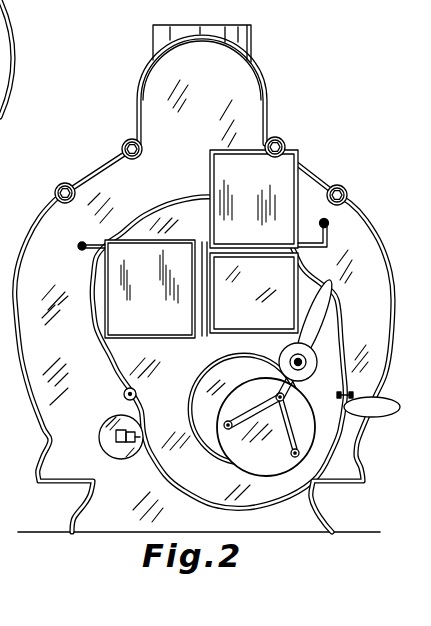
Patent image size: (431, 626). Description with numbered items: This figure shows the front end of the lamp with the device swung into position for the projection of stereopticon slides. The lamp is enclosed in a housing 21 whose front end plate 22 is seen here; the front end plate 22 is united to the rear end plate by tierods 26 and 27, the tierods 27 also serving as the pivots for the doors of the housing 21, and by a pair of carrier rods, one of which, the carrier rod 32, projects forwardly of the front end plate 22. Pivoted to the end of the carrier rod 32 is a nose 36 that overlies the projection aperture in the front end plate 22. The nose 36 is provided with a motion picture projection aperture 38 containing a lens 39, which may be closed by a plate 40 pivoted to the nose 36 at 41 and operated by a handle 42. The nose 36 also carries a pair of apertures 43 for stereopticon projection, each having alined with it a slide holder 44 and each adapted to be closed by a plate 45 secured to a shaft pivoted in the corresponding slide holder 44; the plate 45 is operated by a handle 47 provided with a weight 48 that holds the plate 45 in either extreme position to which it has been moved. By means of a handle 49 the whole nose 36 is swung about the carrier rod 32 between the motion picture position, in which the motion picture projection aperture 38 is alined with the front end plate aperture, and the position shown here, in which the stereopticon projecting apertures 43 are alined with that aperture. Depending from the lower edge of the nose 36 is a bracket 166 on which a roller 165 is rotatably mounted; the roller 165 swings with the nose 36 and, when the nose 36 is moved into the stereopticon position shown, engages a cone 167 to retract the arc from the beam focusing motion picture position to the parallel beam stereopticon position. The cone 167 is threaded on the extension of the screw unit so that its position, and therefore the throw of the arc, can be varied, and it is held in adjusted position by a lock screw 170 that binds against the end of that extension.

The housing 21 is at (29, 257).
The front end plate 22 is at (8, 82).
The tierod 26 is at (122, 150).
The tierod 27 is at (67, 179).
The carrier rod 32 is at (136, 391).
The nose 36 is at (101, 346).
The motion picture projection aperture 38 is at (212, 433).
The lens 39 is at (244, 409).
The plate 40 is at (266, 427).
The pivot 41 is at (304, 362).
The handle 42 is at (331, 301).
The aperture for stereopticon projection 43 is at (210, 341).
The slide holder 44 is at (107, 305).
The plate 45 is at (156, 289).
The handle 47 is at (328, 244).
The weight 48 is at (322, 219).
The handle 49 is at (368, 404).
The roller 165 is at (124, 434).
The bracket 166 is at (129, 445).
The cone 167 is at (116, 437).
The lock screw 170 is at (120, 439).